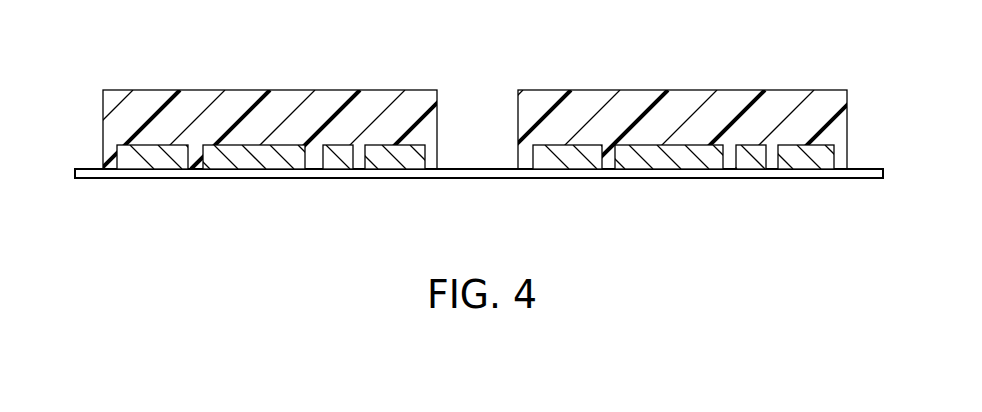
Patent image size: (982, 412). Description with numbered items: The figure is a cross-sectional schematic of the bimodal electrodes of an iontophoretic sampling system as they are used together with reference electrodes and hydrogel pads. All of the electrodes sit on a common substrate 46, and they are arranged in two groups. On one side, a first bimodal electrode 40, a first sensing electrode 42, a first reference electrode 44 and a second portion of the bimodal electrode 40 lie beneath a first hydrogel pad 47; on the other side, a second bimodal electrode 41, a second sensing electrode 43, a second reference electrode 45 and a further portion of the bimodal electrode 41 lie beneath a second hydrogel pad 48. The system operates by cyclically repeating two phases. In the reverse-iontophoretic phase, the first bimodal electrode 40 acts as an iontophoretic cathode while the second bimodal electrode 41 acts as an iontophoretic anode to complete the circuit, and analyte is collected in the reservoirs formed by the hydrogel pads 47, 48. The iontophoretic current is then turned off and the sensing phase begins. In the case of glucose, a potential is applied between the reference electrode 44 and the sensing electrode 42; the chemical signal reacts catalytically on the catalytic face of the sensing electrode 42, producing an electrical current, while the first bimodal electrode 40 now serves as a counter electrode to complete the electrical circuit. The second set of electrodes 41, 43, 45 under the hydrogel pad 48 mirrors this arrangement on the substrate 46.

The first bimodal electrode 40 is at (148, 152).
The second bimodal electrode 41 is at (568, 152).
The first sensing electrode 42 is at (250, 152).
The second sensing electrode 43 is at (660, 152).
The first reference electrode 44 is at (340, 152).
The second reference electrode 45 is at (750, 152).
The substrate 46 is at (471, 168).
The first hydrogel pad 47 is at (247, 108).
The second hydrogel pad 48 is at (692, 108).